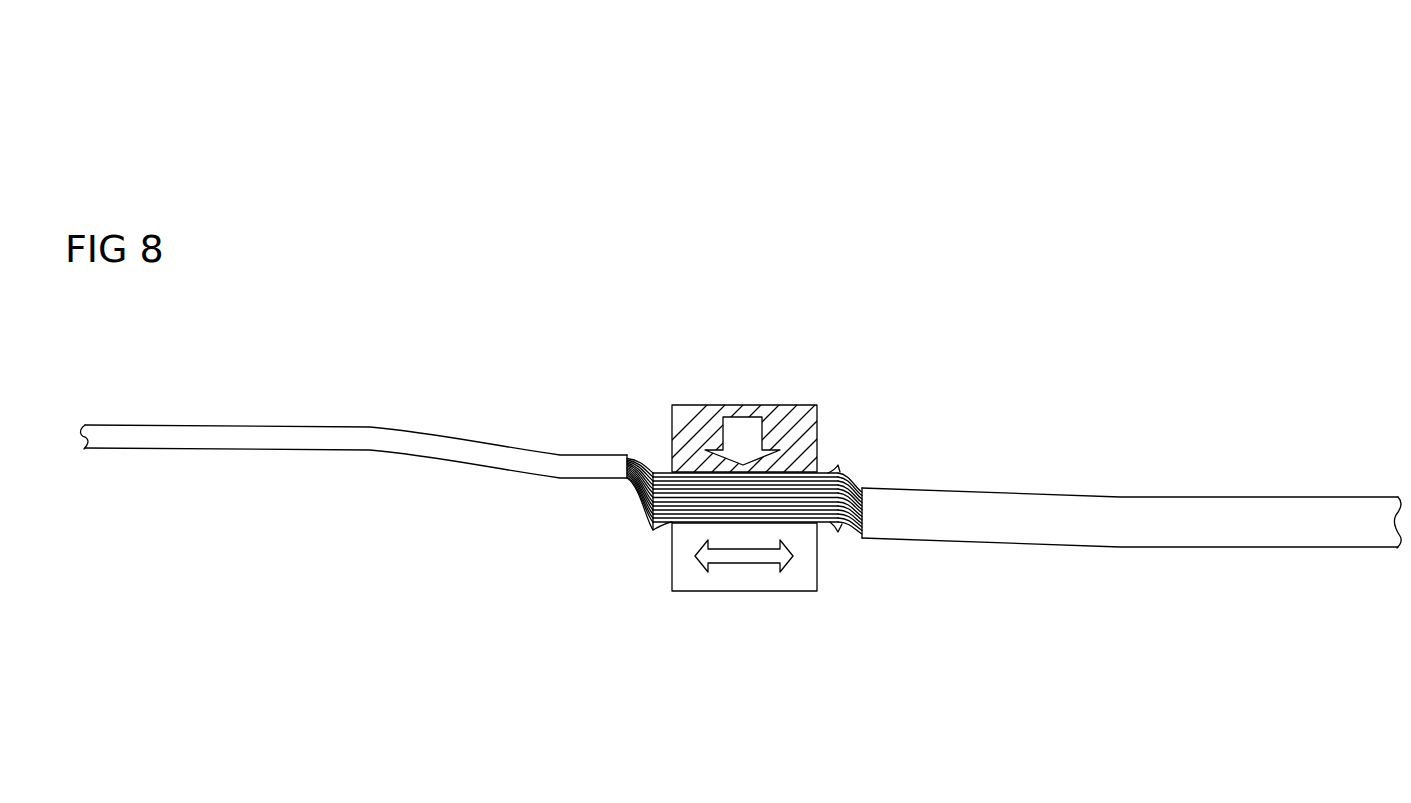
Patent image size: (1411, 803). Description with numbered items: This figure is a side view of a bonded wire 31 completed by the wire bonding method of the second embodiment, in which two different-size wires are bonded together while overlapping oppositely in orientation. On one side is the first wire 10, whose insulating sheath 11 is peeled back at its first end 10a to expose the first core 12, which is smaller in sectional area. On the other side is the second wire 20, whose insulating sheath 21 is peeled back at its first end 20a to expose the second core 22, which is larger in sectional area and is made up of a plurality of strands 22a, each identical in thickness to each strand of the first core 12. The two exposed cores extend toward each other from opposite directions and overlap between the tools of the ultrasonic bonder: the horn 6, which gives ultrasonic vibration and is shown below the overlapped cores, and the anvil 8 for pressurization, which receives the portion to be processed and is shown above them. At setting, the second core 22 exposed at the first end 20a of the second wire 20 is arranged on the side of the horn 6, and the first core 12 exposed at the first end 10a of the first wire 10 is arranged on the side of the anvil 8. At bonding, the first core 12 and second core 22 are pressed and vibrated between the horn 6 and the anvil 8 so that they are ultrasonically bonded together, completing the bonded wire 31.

The horn 6 is at (800, 571).
The anvil 8 is at (806, 410).
The first wire 10 is at (376, 449).
The first end 10a is at (614, 481).
The insulating sheath 11 is at (410, 432).
The first core 12 is at (656, 462).
The second wire 20 is at (1114, 501).
The first end 20a is at (870, 540).
The insulating sheath 21 is at (1072, 505).
The second core 22 is at (863, 494).
The strands 22a is at (834, 467).
The bonded wire 31 is at (620, 571).